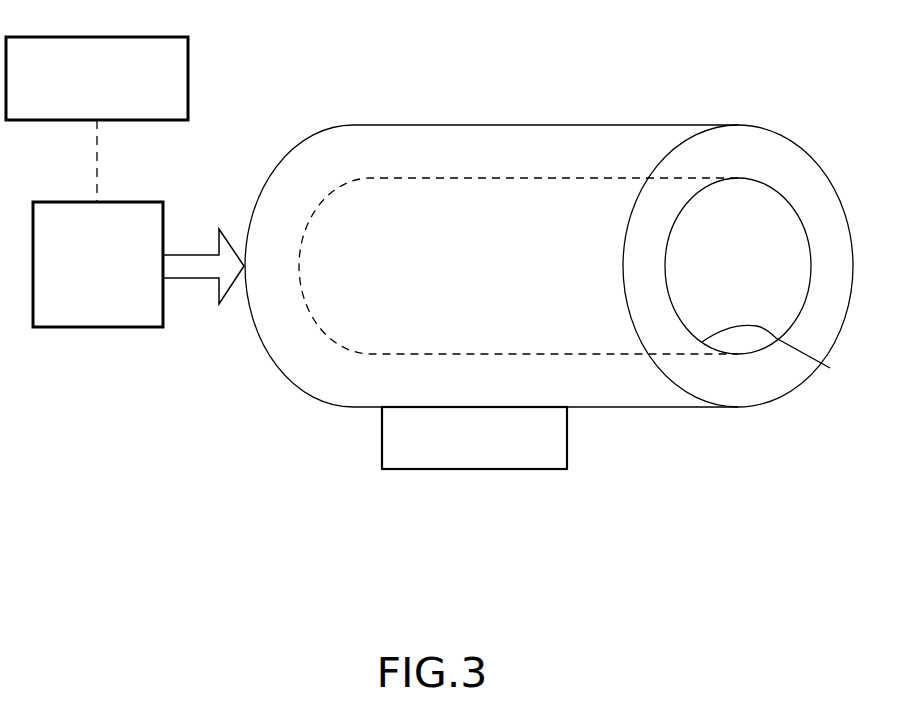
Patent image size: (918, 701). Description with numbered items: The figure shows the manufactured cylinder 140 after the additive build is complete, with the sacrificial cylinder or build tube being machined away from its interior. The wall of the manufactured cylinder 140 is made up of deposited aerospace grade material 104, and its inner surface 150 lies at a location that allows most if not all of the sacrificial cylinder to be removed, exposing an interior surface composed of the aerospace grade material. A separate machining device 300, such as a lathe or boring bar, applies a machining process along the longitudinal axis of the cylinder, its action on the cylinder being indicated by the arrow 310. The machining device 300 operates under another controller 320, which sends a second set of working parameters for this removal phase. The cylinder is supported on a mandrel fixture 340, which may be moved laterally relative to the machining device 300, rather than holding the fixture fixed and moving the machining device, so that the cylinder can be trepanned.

The deposited aerospace grade material 104 is at (763, 352).
The manufactured cylinder 140 is at (622, 407).
The inner surface 150 is at (784, 360).
The machining device 300 is at (81, 308).
The connection arrow from separate machine device to tank 310 is at (202, 278).
The controller 320 is at (115, 102).
The mandrel fixture 340 is at (463, 447).